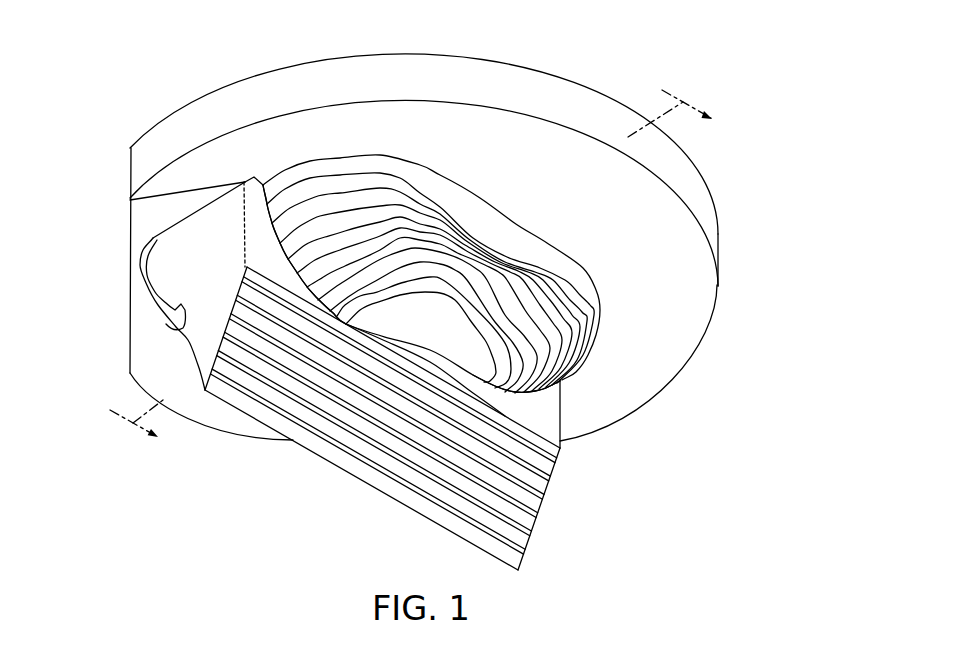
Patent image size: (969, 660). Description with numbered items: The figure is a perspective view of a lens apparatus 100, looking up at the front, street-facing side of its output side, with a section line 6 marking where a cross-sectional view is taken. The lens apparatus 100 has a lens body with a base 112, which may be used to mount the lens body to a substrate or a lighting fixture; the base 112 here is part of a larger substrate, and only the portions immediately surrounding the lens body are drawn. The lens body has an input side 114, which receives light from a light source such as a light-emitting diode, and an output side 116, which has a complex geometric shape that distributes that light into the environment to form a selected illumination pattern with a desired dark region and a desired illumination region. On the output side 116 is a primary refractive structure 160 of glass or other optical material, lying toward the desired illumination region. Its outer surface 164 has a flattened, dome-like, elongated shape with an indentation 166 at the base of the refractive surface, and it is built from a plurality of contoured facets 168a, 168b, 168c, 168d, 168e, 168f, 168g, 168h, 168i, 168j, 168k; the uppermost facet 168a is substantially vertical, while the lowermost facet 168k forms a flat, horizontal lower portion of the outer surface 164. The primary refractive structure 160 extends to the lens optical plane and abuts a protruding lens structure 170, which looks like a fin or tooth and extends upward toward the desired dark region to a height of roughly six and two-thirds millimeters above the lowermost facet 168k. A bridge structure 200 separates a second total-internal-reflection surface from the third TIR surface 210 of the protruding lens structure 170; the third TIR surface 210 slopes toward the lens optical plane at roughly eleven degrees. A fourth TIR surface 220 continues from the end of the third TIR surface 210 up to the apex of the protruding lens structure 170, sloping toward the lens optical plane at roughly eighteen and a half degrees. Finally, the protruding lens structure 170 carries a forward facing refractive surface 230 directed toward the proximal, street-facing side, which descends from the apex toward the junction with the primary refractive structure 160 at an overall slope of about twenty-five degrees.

The lens apparatus 100 is at (160, 106).
The base 112 is at (148, 167).
The input side 114 is at (556, 70).
The output side 116 is at (360, 501).
The primary refractive structure 160 is at (520, 209).
The outer surface 164 is at (477, 225).
The indentation 166 is at (513, 240).
The contoured facet 168a is at (446, 193).
The contoured facet 168b is at (403, 181).
The contoured facet 168c is at (362, 171).
The contoured facet 168d is at (340, 187).
The contoured facet 168e is at (313, 207).
The contoured facet 168f is at (264, 188).
The contoured facet 168g is at (556, 322).
The contoured facet 168h is at (548, 342).
The contoured facet 168i is at (518, 358).
The contoured facet 168j is at (500, 368).
The contoured facet 168k is at (563, 383).
The protruding lens structure 170 is at (545, 527).
The bridge structure 200 is at (137, 314).
The third TIR surface 210 is at (181, 323).
The fourth TIR surface 220 is at (198, 370).
The forward facing refractive surface 230 is at (330, 457).
The section line 6- 6 is at (419, 272).